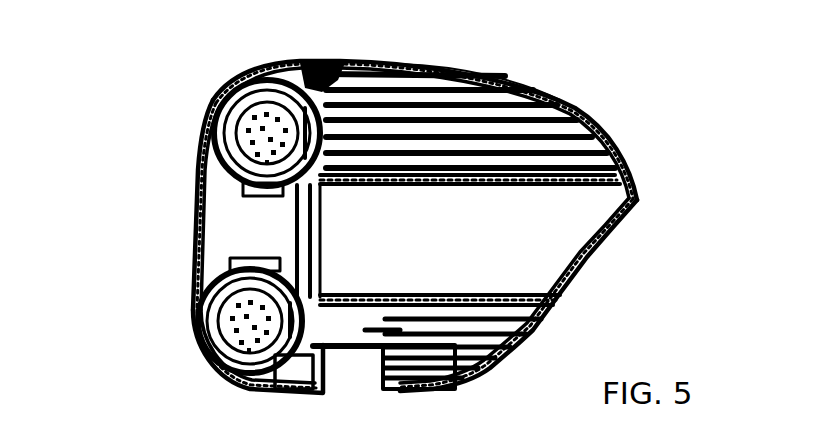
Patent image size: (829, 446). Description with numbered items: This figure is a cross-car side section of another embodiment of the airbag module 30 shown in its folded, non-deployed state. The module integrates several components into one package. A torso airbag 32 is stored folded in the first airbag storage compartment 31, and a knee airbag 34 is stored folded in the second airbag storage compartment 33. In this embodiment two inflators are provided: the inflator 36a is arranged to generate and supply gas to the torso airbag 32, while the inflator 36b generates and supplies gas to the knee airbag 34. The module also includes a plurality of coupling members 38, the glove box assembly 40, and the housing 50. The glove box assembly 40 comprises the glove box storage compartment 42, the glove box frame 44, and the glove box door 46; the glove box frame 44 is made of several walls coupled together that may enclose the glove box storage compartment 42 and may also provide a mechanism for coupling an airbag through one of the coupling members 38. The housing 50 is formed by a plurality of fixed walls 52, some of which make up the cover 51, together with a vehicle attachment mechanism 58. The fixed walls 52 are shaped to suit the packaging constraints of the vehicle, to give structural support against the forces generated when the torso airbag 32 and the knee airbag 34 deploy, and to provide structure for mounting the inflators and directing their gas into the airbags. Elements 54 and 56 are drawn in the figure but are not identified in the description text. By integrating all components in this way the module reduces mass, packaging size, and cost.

The airbag module 30 is at (150, 75).
The first airbag storage compartment 31 is at (322, 95).
The torso airbag 32 is at (580, 110).
The second airbag storage compartment 33 is at (322, 397).
The knee airbag 34 is at (450, 387).
The inflator 36a is at (260, 97).
The inflator 36b is at (217, 317).
The coupling members 38 is at (335, 195).
The glove box assembly 40 is at (593, 283).
The glove box storage compartment 42 is at (437, 239).
The glove box frame 44 is at (490, 293).
The glove box door 46 is at (607, 237).
The housing 50 is at (180, 262).
The cover 51 is at (197, 202).
The fixed walls 52 is at (207, 125).
The upper shell wall 54 is at (533, 87).
The lower fins 56 is at (505, 370).
The vehicle attachment mechanism 58 is at (355, 355).